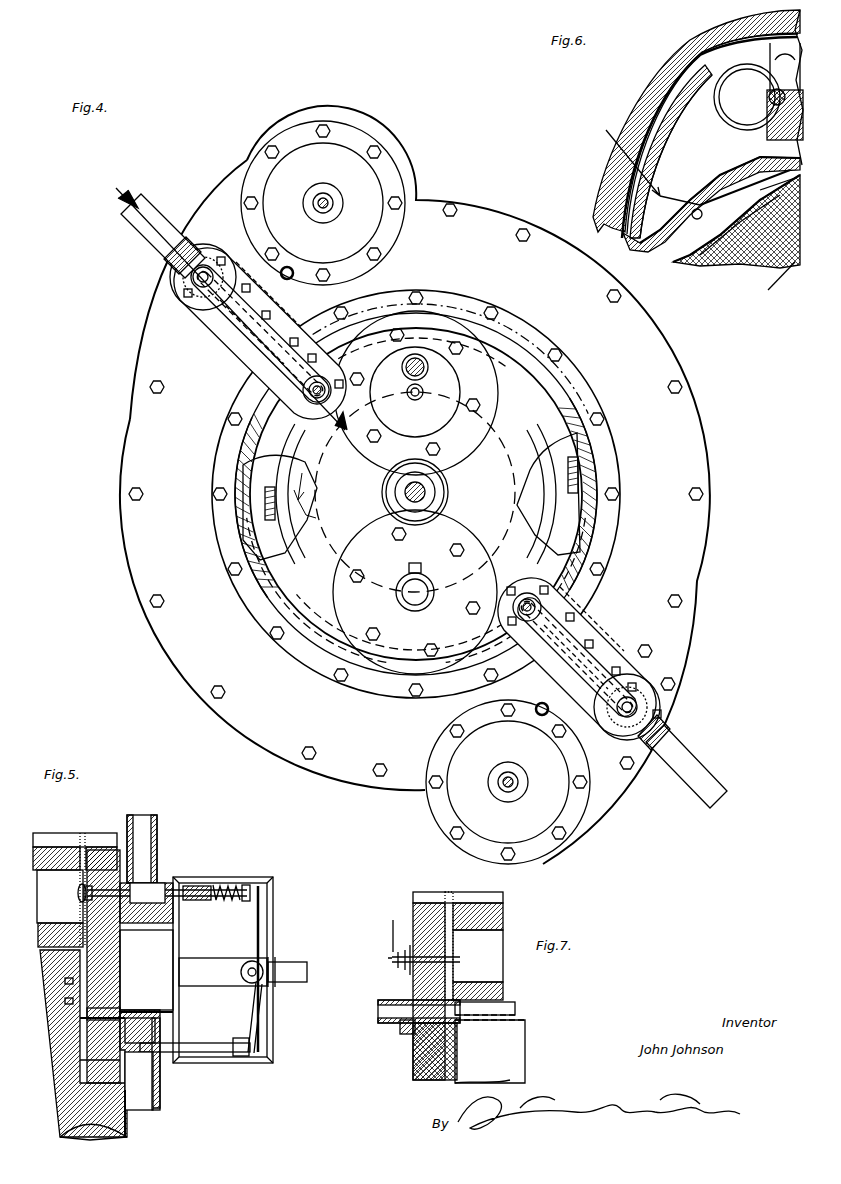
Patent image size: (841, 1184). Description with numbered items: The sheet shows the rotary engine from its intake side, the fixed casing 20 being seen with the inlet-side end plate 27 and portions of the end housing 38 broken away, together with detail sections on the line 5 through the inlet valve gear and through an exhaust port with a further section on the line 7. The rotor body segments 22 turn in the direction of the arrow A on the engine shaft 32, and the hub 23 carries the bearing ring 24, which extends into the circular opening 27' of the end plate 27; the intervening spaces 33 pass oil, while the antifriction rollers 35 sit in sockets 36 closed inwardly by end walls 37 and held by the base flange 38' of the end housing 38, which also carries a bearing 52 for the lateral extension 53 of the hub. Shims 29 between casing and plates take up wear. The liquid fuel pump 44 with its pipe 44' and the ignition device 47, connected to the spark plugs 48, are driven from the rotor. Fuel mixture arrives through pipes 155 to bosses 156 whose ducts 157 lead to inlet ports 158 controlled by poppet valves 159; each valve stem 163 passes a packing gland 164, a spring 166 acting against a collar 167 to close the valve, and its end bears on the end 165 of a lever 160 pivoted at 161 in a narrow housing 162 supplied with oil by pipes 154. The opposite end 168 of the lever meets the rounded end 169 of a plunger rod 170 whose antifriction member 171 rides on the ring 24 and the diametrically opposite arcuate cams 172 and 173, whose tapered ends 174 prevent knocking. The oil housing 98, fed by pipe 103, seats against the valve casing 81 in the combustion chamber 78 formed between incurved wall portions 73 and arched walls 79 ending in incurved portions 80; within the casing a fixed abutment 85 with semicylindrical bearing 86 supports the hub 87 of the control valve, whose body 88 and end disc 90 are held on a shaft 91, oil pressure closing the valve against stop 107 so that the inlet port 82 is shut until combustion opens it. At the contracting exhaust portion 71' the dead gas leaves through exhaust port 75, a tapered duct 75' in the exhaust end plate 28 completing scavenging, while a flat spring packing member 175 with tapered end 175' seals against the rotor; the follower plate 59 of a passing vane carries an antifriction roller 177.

In FIG. 4, the fixed casing 20 is at (707, 489).
In FIG. 4, the end plate 27 is at (410, 490).
In FIG. 5, the end plate 27 is at (118, 966).
In FIG. 4, the sockets 36 is at (537, 342).
In FIG. 4, the end housing 38 is at (418, 500).
In FIG. 5, the end housing 38 is at (152, 1070).
In FIG. 4, the base flange 38' is at (431, 489).
In FIG. 5, the base flange 38' is at (163, 999).
In FIG. 4, the antifriction rollers 35 is at (590, 510).
In FIG. 5, the antifriction rollers 35 is at (122, 1000).
In FIG. 4, the intervening spaces 33 is at (586, 528).
In FIG. 5, the intervening spaces 33 is at (78, 1018).
In FIG. 4, the ends of the cams 174 is at (256, 452).
In FIG. 5, the ends of the cams 174 is at (58, 1100).
In FIG. 4, the arcuate cam 172 is at (300, 521).
In FIG. 5, the arcuate cam 172 is at (126, 1118).
In FIG. 4, the arcuate cam 173 is at (540, 494).
In FIG. 4, the hub 23 is at (318, 488).
In FIG. 5, the hub 23 is at (95, 1140).
In FIG. 4, the bearing ring 24 is at (300, 470).
In FIG. 5, the bearing ring 24 is at (80, 1068).
In FIG. 4, the arrows A is at (312, 502).
In FIG. 4, the engine shaft 32 is at (426, 492).
In FIG. 4, the bearing 52 is at (440, 502).
In FIG. 4, the lateral extension 53 is at (430, 484).
In FIG. 4, the liquid fuel pump 44 is at (428, 393).
In FIG. 4, the pipe 44' is at (410, 405).
In FIG. 4, the pipes 154 is at (418, 360).
In FIG. 4, the ignition device 47 is at (400, 585).
In FIG. 4, the oil housing 98 is at (343, 150).
In FIG. 4, the pipe 103 is at (320, 195).
In FIG. 4, the lever 160 is at (212, 295).
In FIG. 5, the lever 160 is at (262, 933).
In FIG. 4, the housing 162 is at (265, 345).
In FIG. 5, the housing 162 is at (265, 878).
In FIG. 4, the boss 156 is at (176, 283).
In FIG. 5, the boss 156 is at (148, 930).
In FIG. 4, the opposite end of the lever 168 is at (305, 390).
In FIG. 5, the opposite end of the lever 168 is at (258, 1047).
In FIG. 4, the end of the lever 165 is at (208, 270).
In FIG. 5, the end of the lever 165 is at (262, 893).
In FIG. 4, the pivot 161 is at (242, 312).
In FIG. 5, the pivot 161 is at (262, 982).
In FIG. 4, the pipes 155 is at (142, 228).
In FIG. 5, the pipes 155 is at (148, 830).
In FIG. 4, the section line 5 is at (219, 317).
In FIG. 6, the outwardly arched wall portions 79 is at (628, 110).
In FIG. 5, the outwardly arched wall portions 79 is at (95, 846).
In FIG. 7, the outwardly arched wall portions 79 is at (505, 910).
In FIG. 6, the incurved portions 80 is at (760, 24).
In FIG. 6, the valve casing 81 is at (700, 80).
In FIG. 6, the fixed abutment 85 is at (740, 58).
In FIG. 6, the combustion chamber 78 is at (675, 105).
In FIG. 5, the combustion chamber 78 is at (45, 846).
In FIG. 7, the combustion chamber 78 is at (495, 970).
In FIG. 6, the inlet port 82 is at (718, 100).
In FIG. 6, the valve body 88 is at (745, 128).
In FIG. 6, the end disc 90 is at (722, 92).
In FIG. 6, the semicylindrical bearing 86 is at (766, 98).
In FIG. 6, the hub 87 is at (790, 72).
In FIG. 6, the shaft 91 is at (770, 104).
In FIG. 6, the section line 7 is at (693, 214).
In FIG. 6, the incurved wall portions 73 is at (646, 245).
In FIG. 5, the incurved wall portions 73 is at (40, 942).
In FIG. 7, the incurved wall portions 73 is at (505, 990).
In FIG. 6, the exhaust port 75 is at (719, 227).
In FIG. 7, the exhaust port 75 is at (417, 1051).
In FIG. 6, the tapered duct 75' is at (740, 246).
In FIG. 7, the tapered duct 75' is at (395, 1051).
In FIG. 6, the stop 107 is at (738, 185).
In FIG. 6, the flat spring packing member 175 is at (677, 181).
In FIG. 6, the tapered end 175' is at (780, 230).
In FIG. 6, the exhaust portion 71' is at (669, 191).
In FIG. 5, the shims 29 is at (84, 832).
In FIG. 7, the shims 29 is at (450, 900).
In FIG. 5, the inlet port 158 is at (100, 888).
In FIG. 5, the poppet valve 159 is at (61, 896).
In FIG. 5, the valve stem 163 is at (86, 900).
In FIG. 5, the duct 157 is at (150, 886).
In FIG. 5, the spring 166 is at (228, 884).
In FIG. 5, the packing gland 164 is at (198, 902).
In FIG. 5, the collar 167 is at (245, 903).
In FIG. 5, the plunger rod 170 is at (220, 1042).
In FIG. 5, the rounded end 169 is at (240, 1056).
In FIG. 5, the end walls 37 is at (64, 1000).
In FIG. 5, the body segments 22 is at (44, 1042).
In FIG. 7, the body segments 22 is at (528, 1036).
In FIG. 5, the circular opening 27' is at (140, 1030).
In FIG. 5, the antifriction member 171 is at (160, 1090).
In FIG. 7, the end plate 28 is at (428, 902).
In FIG. 7, the antifriction roller 177 is at (518, 1006).
In FIG. 7, the follower plate 59 is at (505, 1055).
In FIG. 7, the spark plugs 48 is at (398, 950).